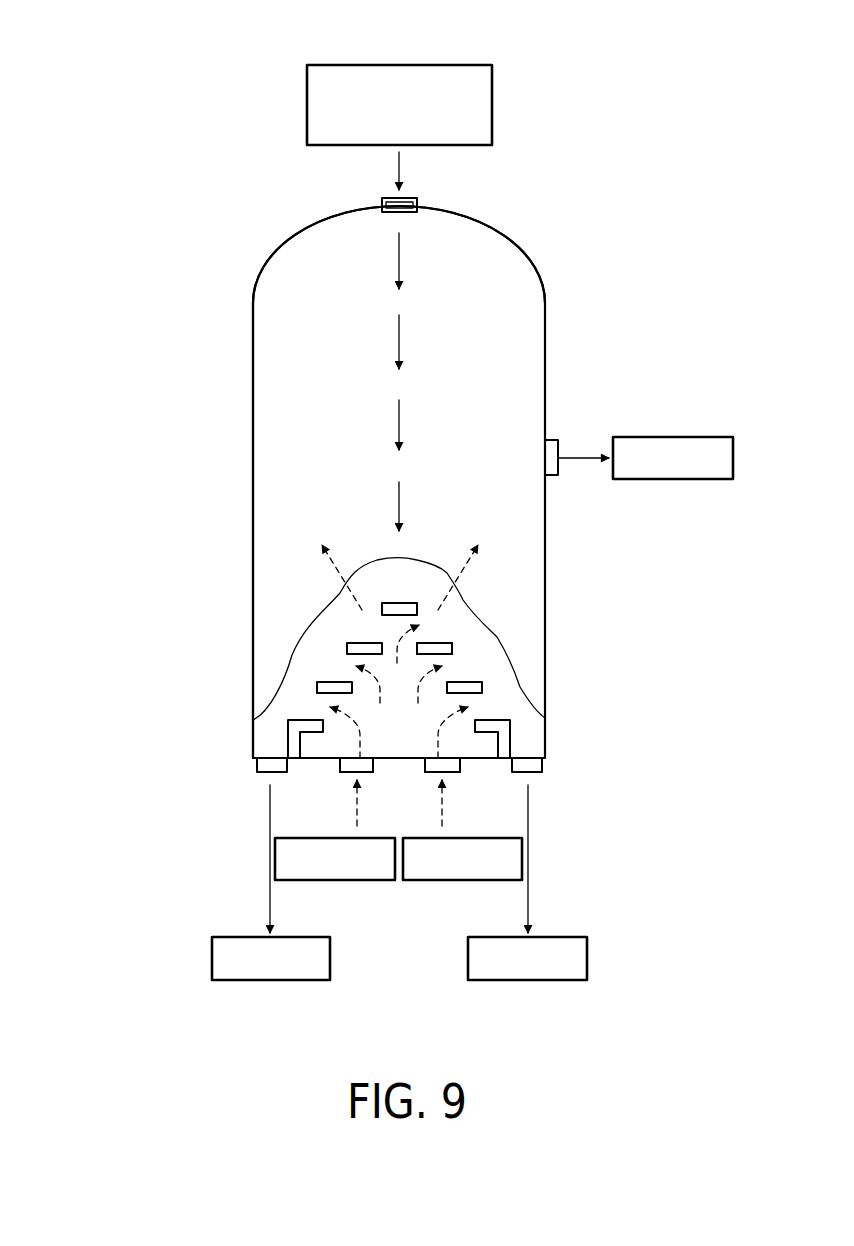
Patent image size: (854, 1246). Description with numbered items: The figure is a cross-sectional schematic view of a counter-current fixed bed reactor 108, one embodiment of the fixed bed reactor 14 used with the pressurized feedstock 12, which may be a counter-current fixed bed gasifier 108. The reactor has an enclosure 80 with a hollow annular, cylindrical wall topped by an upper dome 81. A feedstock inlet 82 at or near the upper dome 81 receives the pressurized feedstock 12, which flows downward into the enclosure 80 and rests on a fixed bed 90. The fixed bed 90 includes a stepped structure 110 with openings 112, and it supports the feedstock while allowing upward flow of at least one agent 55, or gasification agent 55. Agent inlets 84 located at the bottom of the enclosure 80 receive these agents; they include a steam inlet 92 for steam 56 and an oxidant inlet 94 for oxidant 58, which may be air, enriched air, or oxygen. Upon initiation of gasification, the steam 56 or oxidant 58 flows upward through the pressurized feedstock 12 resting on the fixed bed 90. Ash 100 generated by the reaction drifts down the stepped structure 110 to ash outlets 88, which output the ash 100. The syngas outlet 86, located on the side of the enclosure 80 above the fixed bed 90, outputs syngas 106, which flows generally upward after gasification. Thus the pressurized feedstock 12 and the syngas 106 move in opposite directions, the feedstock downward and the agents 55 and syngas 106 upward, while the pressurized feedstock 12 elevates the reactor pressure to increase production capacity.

The pressurized feedstock 12 is at (400, 65).
The fixed bed reactor 14 is at (136, 306).
The agent 55 is at (399, 940).
The steam 56 is at (442, 882).
The oxidant 58 is at (355, 882).
The enclosure 80 is at (253, 487).
The upper dome 81 is at (483, 222).
The feedstock inlet 82 is at (403, 198).
The agent inlets 84 is at (372, 776).
The syngas outlet 86 is at (553, 440).
The ash outlets 88 is at (266, 775).
The fixed bed 90 is at (327, 679).
The steam inlet 92 is at (462, 772).
The oxidant inlet 94 is at (340, 772).
The ash 100 is at (270, 728).
The syngas 106 is at (673, 437).
The counter-current fixed bed reactor 108 is at (251, 432).
The stepped structure 110 is at (434, 642).
The openings 112 is at (478, 709).